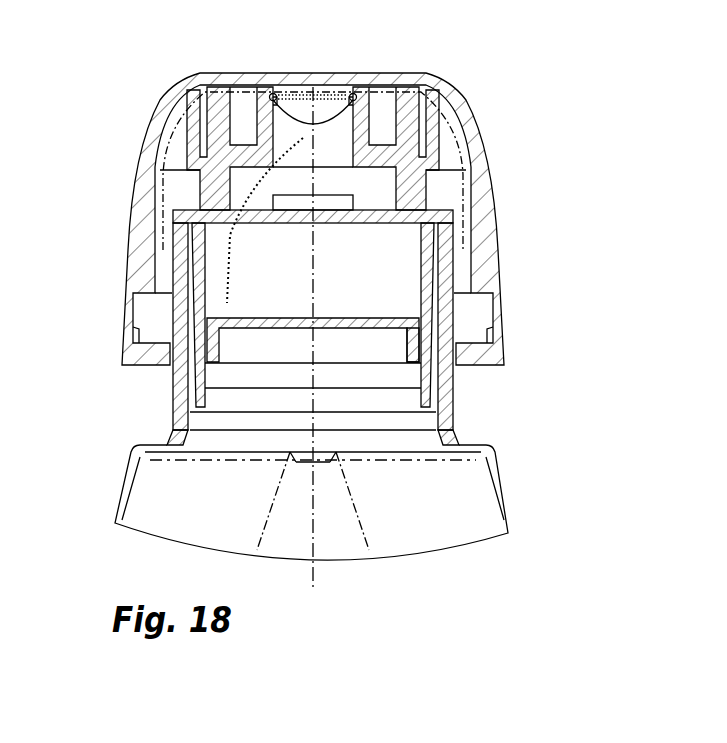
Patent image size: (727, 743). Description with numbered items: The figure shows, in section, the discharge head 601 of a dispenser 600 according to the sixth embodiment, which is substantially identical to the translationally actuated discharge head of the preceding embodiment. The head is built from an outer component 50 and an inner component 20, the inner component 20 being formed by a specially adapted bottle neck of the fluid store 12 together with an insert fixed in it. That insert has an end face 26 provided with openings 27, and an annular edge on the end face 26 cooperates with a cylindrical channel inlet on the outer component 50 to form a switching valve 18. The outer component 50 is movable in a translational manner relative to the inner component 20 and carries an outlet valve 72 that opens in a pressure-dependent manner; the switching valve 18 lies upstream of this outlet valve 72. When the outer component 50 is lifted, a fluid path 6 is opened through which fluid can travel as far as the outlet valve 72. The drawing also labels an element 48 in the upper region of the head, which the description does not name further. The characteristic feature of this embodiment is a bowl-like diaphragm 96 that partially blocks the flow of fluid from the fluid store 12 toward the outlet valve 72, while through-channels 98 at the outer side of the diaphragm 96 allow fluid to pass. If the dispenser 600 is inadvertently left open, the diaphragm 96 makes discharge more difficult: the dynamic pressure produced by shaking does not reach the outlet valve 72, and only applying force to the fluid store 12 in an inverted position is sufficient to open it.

The dispenser 600 is at (105, 72).
The discharge head 601 is at (120, 212).
The openings 27 is at (222, 213).
The outlet valve 72 is at (292, 113).
The head housing 48 is at (320, 220).
The fluid path 6 is at (227, 282).
The end face 26 is at (355, 223).
The switching valve 18 is at (362, 198).
The outer component 50 is at (133, 333).
The inner component 20 is at (188, 367).
The fluid store 12 is at (513, 500).
The through-channels 98 is at (418, 335).
The diaphragm 96 is at (353, 328).